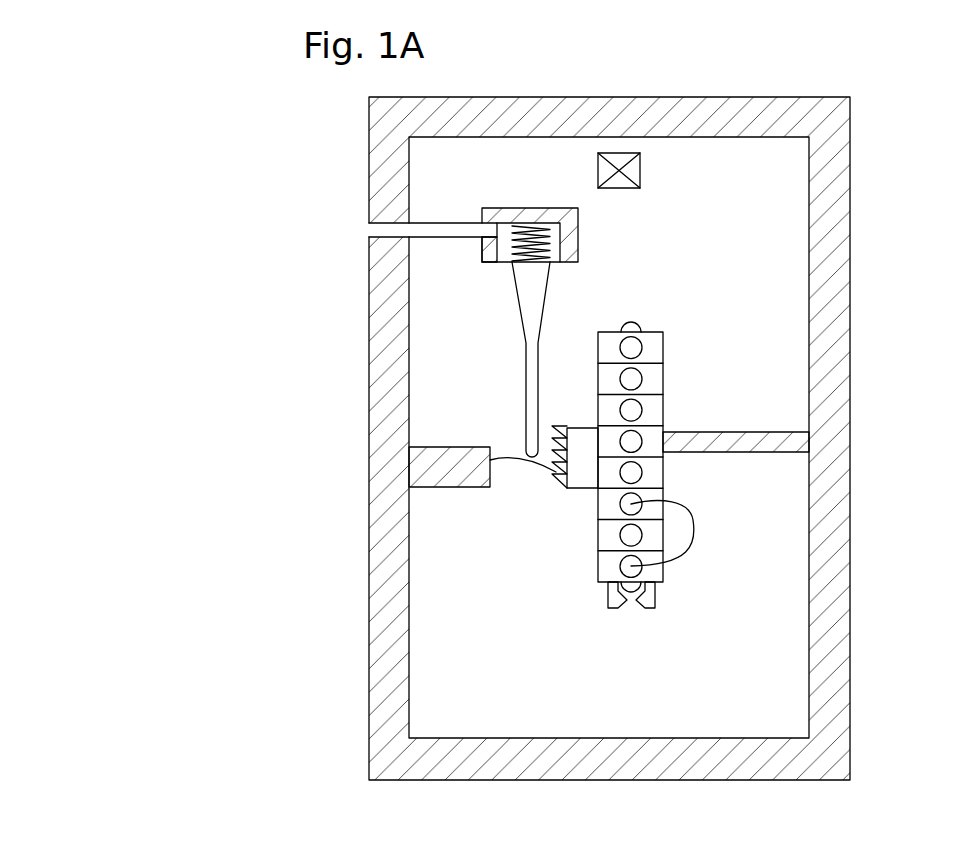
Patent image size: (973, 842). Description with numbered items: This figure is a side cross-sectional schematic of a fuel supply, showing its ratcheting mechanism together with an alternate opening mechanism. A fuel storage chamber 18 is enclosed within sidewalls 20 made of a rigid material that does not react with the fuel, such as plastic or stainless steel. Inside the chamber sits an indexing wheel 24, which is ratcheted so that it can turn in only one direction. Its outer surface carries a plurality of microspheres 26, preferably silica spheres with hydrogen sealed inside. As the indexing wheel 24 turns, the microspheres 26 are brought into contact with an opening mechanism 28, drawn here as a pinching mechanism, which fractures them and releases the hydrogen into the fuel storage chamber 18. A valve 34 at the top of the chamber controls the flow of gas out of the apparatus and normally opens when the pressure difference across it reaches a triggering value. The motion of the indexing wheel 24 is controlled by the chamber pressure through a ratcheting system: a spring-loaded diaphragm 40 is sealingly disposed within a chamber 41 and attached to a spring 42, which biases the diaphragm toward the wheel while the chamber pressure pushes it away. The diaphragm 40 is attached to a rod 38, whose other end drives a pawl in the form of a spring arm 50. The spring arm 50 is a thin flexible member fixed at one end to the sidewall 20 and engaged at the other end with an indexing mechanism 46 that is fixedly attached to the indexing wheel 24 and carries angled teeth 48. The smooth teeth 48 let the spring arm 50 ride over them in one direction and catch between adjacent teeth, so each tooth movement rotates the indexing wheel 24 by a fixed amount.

The fuel storage chamber 18 is at (433, 162).
The sidewalls 20 is at (833, 117).
The indexing wheel 24 is at (668, 378).
The microspheres 26 is at (631, 535).
The opening mechanism 28 is at (647, 598).
The valve 34 is at (617, 160).
The rod 38 is at (527, 285).
The spring-loaded diaphragm 40 is at (507, 260).
The chamber 41 is at (557, 233).
The spring 42 is at (513, 230).
The indexing mechanism 46 is at (585, 470).
The angled teeth 48 is at (563, 482).
The spring arm 50 is at (510, 462).